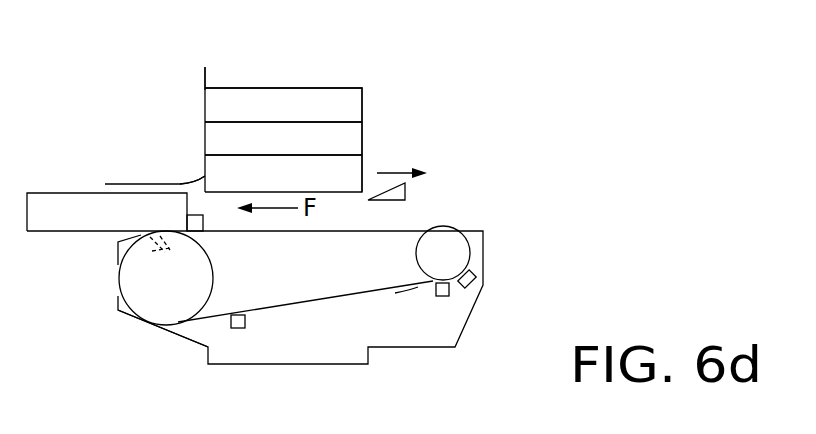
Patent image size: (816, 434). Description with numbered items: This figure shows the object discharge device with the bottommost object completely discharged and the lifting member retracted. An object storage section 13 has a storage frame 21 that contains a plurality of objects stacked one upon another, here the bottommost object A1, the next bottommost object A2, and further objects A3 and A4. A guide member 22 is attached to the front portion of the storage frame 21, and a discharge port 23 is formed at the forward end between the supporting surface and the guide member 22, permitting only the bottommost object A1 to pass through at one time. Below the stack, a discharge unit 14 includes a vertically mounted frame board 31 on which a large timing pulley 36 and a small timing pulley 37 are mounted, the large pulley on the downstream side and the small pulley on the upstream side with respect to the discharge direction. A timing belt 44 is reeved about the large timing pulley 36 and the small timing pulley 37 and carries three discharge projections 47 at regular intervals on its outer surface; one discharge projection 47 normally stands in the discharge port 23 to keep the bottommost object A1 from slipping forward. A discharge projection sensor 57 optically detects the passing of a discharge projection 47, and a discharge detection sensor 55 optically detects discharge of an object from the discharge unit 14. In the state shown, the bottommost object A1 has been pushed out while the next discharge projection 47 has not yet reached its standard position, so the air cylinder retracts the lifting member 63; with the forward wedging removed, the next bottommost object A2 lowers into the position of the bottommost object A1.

The object storage section 13 is at (275, 66).
The storage frame 21 is at (205, 80).
The guide member 22 is at (120, 184).
The discharge port 23 is at (185, 184).
The bottommost object A1 is at (46, 193).
The next bottommost object A2 is at (362, 168).
The object A3 is at (362, 140).
The object A4 is at (362, 108).
The lifting member 63 is at (408, 192).
The discharge unit 14 is at (470, 208).
The frame board 31 is at (445, 330).
The timing belt 44 is at (383, 292).
The small timing pulley 37 is at (418, 287).
The discharge projection 47 is at (203, 218).
The discharge projection sensor 57 is at (478, 286).
The large timing pulley 36 is at (212, 318).
The discharge detection sensor 55 is at (160, 240).